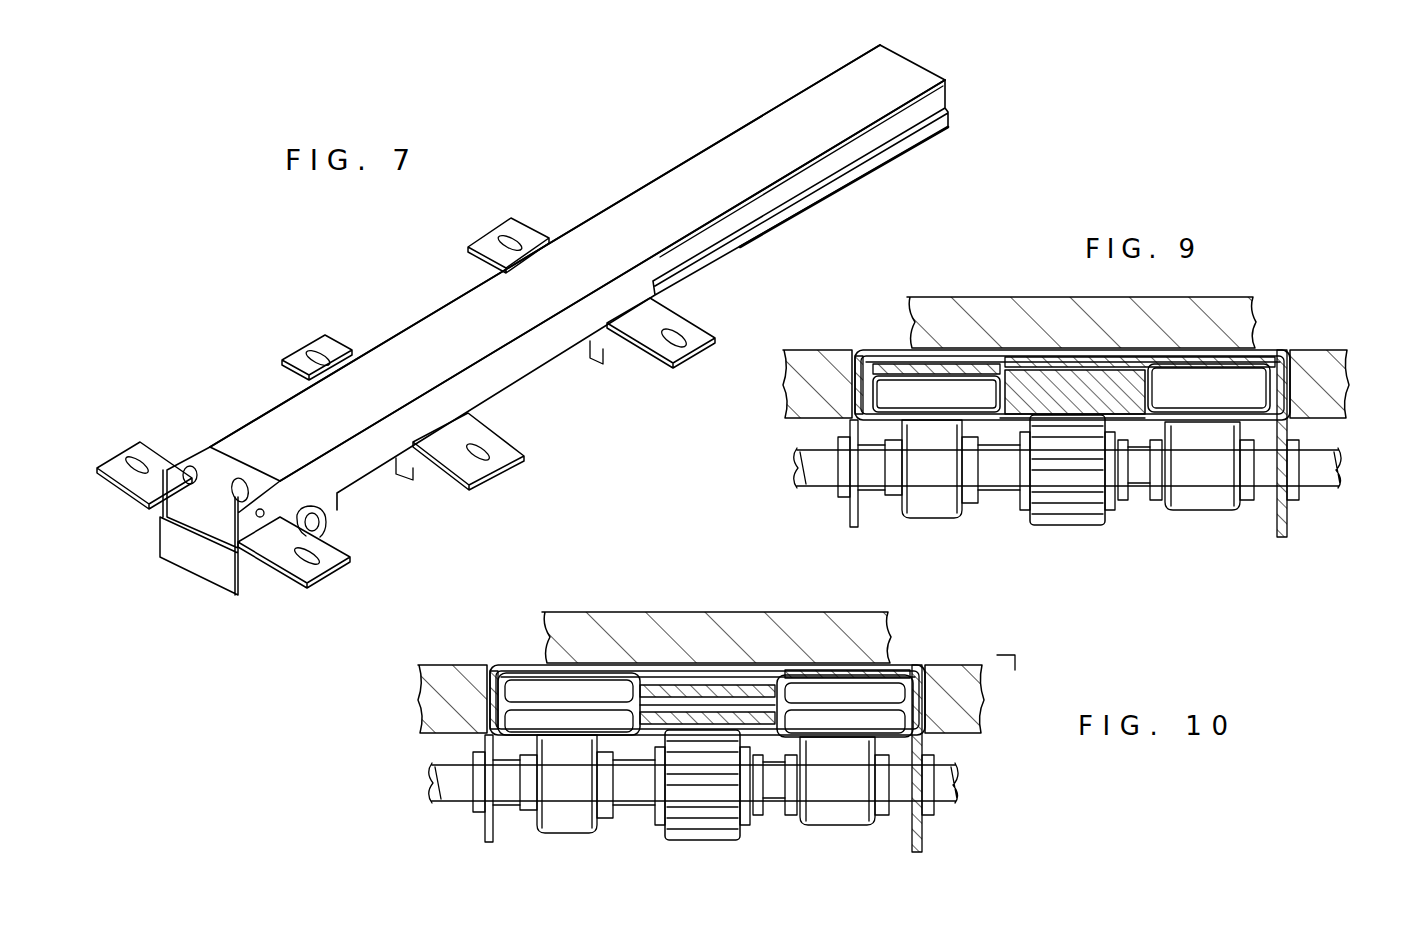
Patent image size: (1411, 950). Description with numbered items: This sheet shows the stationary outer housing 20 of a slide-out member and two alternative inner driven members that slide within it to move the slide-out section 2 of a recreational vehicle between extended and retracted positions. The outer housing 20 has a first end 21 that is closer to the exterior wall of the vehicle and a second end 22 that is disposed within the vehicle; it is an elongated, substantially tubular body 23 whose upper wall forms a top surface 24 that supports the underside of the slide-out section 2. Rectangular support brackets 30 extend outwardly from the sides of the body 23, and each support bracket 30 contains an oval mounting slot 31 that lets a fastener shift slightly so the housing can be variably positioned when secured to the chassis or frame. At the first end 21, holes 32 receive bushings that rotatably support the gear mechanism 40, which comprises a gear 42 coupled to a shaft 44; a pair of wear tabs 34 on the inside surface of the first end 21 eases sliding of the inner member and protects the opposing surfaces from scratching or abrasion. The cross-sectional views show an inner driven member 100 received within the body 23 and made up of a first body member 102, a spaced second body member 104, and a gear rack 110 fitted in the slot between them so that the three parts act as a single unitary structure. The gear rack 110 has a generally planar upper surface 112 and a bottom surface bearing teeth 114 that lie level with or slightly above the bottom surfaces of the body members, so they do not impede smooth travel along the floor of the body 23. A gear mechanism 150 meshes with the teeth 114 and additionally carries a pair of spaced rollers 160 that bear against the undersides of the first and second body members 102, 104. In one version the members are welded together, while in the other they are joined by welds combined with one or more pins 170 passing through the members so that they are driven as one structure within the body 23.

In FIG. 9, the slide-out section 2 is at (993, 305).
In FIG. 10, the slide-out section 2 is at (701, 645).
In FIG. 7, the outer housing 20 is at (410, 272).
In FIG. 9, the outer housing 20 is at (849, 385).
In FIG. 7, the first end 21 is at (217, 572).
In FIG. 7, the second end 22 is at (944, 83).
In FIG. 7, the body 23 is at (558, 262).
In FIG. 9, the body 23 is at (866, 353).
In FIG. 10, the body 23 is at (707, 638).
In FIG. 7, the top surface 24 is at (692, 211).
In FIG. 7, the support bracket 30 is at (510, 222).
In FIG. 7, the mounting slot 31 is at (680, 330).
In FIG. 7, the hole 32 is at (312, 525).
In FIG. 7, the wear tab 34 is at (190, 463).
In FIG. 9, the gear mechanism 40 is at (1060, 518).
In FIG. 10, the gear mechanism 40 is at (732, 823).
In FIG. 9, the gear 42 is at (1063, 505).
In FIG. 9, the shaft 44 is at (1317, 470).
In FIG. 10, the shaft 44 is at (732, 802).
In FIG. 9, the inner driven member 100 is at (1250, 367).
In FIG. 9, the first body member 102 is at (945, 372).
In FIG. 10, the first body member 102 is at (573, 643).
In FIG. 9, the second body member 104 is at (1203, 367).
In FIG. 10, the second body member 104 is at (845, 655).
In FIG. 9, the gear rack 110 is at (1067, 407).
In FIG. 10, the gear rack 110 is at (707, 639).
In FIG. 9, the upper surface 112 is at (1090, 370).
In FIG. 9, the teeth 114 is at (1046, 408).
In FIG. 9, the gear mechanism 150 is at (1150, 521).
In FIG. 10, the gear mechanism 150 is at (701, 835).
In FIG. 9, the roller 160 is at (1217, 503).
In FIG. 10, the roller 160 is at (860, 814).
In FIG. 10, the pin 170 is at (543, 666).